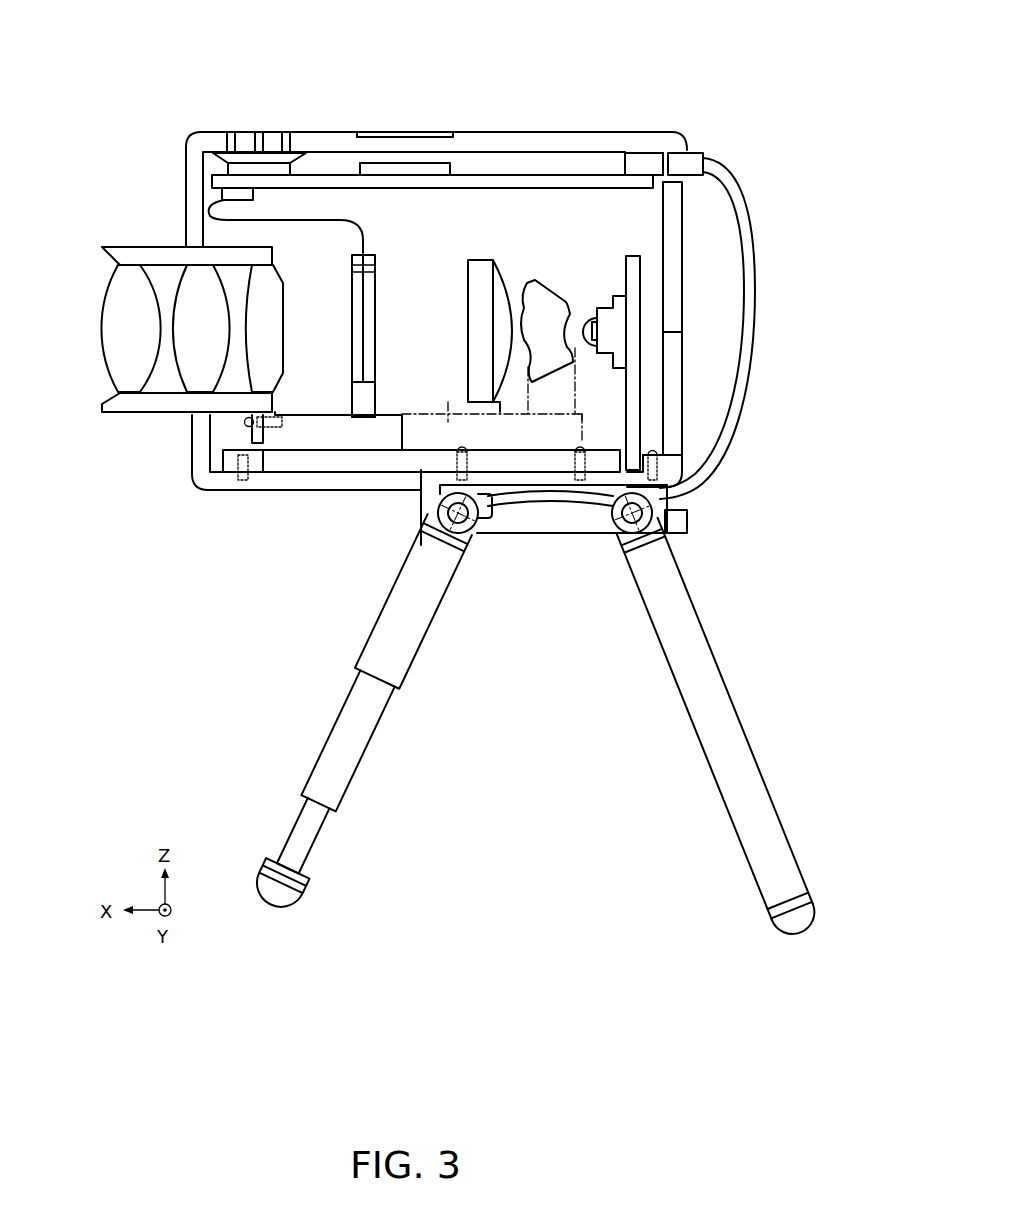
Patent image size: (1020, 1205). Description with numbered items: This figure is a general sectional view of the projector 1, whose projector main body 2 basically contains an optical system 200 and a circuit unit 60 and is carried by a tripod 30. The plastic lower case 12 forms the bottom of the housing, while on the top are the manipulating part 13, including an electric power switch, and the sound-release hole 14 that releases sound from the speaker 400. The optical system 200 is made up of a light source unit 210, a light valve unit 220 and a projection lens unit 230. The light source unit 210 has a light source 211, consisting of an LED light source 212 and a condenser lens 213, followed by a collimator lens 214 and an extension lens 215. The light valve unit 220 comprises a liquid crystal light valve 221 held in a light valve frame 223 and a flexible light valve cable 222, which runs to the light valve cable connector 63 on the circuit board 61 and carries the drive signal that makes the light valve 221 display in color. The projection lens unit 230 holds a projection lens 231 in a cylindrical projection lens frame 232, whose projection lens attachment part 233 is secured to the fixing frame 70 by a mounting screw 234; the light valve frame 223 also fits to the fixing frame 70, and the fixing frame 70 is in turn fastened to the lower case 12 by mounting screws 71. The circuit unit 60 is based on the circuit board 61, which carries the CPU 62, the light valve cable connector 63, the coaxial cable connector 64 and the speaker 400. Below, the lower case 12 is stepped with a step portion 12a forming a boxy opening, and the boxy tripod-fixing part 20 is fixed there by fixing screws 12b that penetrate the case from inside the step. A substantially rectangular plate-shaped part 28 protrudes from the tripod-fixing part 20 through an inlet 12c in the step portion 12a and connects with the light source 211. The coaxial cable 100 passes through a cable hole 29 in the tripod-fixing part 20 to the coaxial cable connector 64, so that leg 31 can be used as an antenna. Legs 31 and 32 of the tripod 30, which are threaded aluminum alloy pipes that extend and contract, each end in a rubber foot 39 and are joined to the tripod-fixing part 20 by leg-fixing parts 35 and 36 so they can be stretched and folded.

The projector 1 is at (693, 64).
The projector main body 2 is at (416, 94).
The lower case 12 is at (196, 478).
The step portion 12a is at (408, 456).
The fixing screws 12b is at (463, 450).
The inlet 12c is at (612, 455).
The manipulating part 13 is at (375, 131).
The sound-release hole 14 is at (257, 131).
The tripod-fixing part 20 is at (428, 508).
The plate-shaped part 28 is at (628, 392).
The cable hole 29 is at (688, 512).
The tripod 30 is at (770, 632).
The leg 31 is at (420, 652).
The leg 32 is at (722, 652).
The leg-fixing part 35 is at (479, 547).
The leg-fixing part 36 is at (605, 555).
The rubber foot 39 is at (270, 912).
The circuit unit 60 is at (532, 131).
The circuit board 61 is at (592, 131).
The CPU 62 is at (468, 131).
The light valve cable connector 63 is at (213, 131).
The coaxial cable connector 64 is at (645, 131).
The fixing frame 70 is at (305, 458).
The mounting screws 71 is at (225, 458).
The coaxial cable 100 is at (757, 298).
The optical system 200 is at (441, 256).
The light source unit 210 is at (527, 248).
The light source 211 is at (622, 247).
The LED light source 212 is at (600, 310).
The condenser lens 213 is at (590, 318).
The collimator lens 214 is at (532, 305).
The extension lens 215 is at (478, 338).
The light valve unit 220 is at (393, 270).
The liquid crystal light valve 221 is at (372, 303).
The light valve cable 222 is at (313, 220).
The light valve frame 223 is at (372, 396).
The projection lens unit 230 is at (104, 246).
The projection lens 231 is at (108, 330).
The projection lens frame 232 is at (108, 402).
The projection lens attachment part 233 is at (245, 480).
The mounting screw 234 is at (247, 421).
The speaker 400 is at (311, 131).